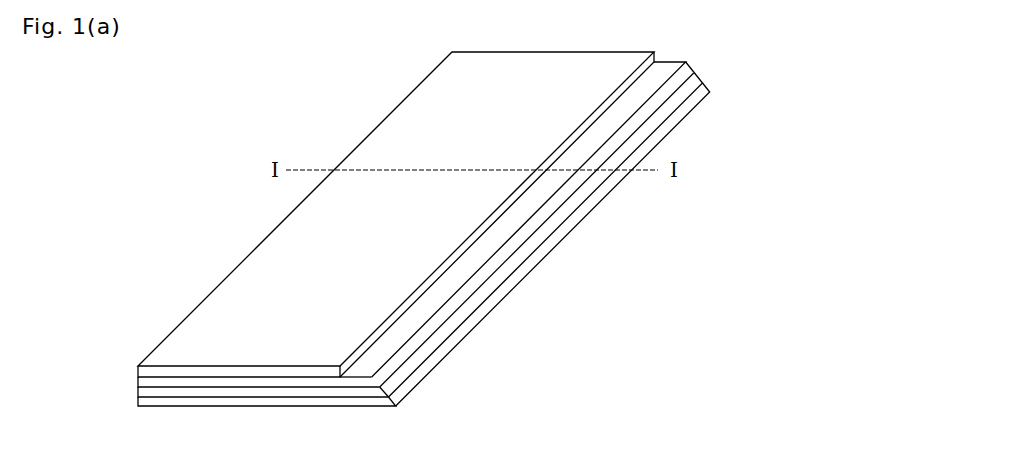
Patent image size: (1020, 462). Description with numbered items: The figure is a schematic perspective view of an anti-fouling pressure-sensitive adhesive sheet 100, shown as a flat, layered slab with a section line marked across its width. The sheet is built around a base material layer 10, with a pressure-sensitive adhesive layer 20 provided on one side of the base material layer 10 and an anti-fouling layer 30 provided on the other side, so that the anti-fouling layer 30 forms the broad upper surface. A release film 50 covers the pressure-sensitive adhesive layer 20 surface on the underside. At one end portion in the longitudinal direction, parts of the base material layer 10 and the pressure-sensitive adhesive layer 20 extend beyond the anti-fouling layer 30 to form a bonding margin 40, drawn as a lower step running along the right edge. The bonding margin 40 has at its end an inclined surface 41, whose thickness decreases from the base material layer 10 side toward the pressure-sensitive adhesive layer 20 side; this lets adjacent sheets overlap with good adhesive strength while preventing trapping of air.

The anti-fouling pressure-sensitive adhesive sheet 100 is at (266, 62).
The anti-fouling layer 30 is at (138, 372).
The base material layer 10 is at (138, 383).
The pressure-sensitive adhesive layer 20 is at (138, 390).
The release film 50 is at (138, 400).
The bonding margin 40 is at (508, 228).
The inclined surface 41 is at (455, 333).